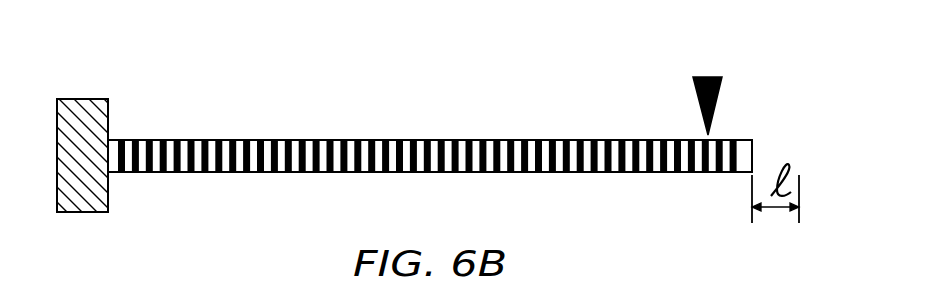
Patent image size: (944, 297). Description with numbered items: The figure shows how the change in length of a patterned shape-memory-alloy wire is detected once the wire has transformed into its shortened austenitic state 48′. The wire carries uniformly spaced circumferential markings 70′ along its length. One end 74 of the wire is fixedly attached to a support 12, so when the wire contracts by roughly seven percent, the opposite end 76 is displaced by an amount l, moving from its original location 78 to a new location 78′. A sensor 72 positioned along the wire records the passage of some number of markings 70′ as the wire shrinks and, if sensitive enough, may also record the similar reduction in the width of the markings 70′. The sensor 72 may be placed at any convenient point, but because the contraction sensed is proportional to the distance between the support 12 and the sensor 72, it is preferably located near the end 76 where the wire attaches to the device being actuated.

The support 12 is at (84, 106).
The wire in austenitic state 48′ is at (420, 140).
The markings 70′ is at (638, 172).
The sensor 72 is at (719, 99).
The end of the wire 74 is at (108, 158).
The end of the wire 76 is at (752, 152).
The location 78′ is at (752, 215).
The location 78 is at (799, 215).